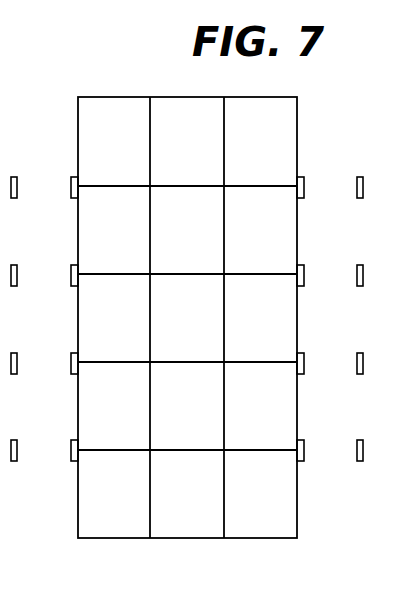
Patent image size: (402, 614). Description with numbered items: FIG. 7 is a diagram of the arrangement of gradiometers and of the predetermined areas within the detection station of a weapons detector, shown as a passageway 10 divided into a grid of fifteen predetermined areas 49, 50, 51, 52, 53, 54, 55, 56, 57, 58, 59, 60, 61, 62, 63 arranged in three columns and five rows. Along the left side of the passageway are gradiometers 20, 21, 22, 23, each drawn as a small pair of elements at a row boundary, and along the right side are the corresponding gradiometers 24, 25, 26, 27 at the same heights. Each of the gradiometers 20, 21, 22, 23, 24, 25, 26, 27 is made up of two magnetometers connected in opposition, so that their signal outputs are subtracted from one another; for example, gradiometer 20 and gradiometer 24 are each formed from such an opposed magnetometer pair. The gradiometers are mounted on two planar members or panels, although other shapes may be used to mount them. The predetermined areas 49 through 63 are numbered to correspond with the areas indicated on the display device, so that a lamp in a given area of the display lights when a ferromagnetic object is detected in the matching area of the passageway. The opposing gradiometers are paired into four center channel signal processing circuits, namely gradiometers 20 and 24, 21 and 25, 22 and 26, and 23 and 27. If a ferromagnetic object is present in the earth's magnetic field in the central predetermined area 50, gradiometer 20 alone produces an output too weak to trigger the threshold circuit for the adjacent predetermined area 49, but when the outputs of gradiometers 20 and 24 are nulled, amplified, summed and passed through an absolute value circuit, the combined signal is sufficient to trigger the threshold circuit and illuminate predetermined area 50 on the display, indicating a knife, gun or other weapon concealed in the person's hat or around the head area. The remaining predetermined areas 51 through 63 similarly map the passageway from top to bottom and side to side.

The display panel array 10 is at (170, 63).
The gradiometer 20 is at (62, 199).
The gradiometer 21 is at (62, 287).
The gradiometer 22 is at (62, 375).
The gradiometer 23 is at (62, 462).
The gradiometer 24 is at (348, 199).
The gradiometer 25 is at (348, 287).
The gradiometer 26 is at (348, 375).
The gradiometer 27 is at (348, 462).
The predetermined area 49 is at (114, 141).
The predetermined area 50 is at (187, 141).
The predetermined area 51 is at (260, 141).
The predetermined area 52 is at (114, 230).
The predetermined area 53 is at (187, 230).
The predetermined area 54 is at (260, 230).
The predetermined area 55 is at (114, 318).
The predetermined area 56 is at (187, 318).
The predetermined area 57 is at (260, 318).
The predetermined area 58 is at (114, 406).
The predetermined area 59 is at (187, 406).
The predetermined area 60 is at (260, 406).
The predetermined area 61 is at (114, 494).
The predetermined area 62 is at (187, 494).
The predetermined area 63 is at (260, 494).